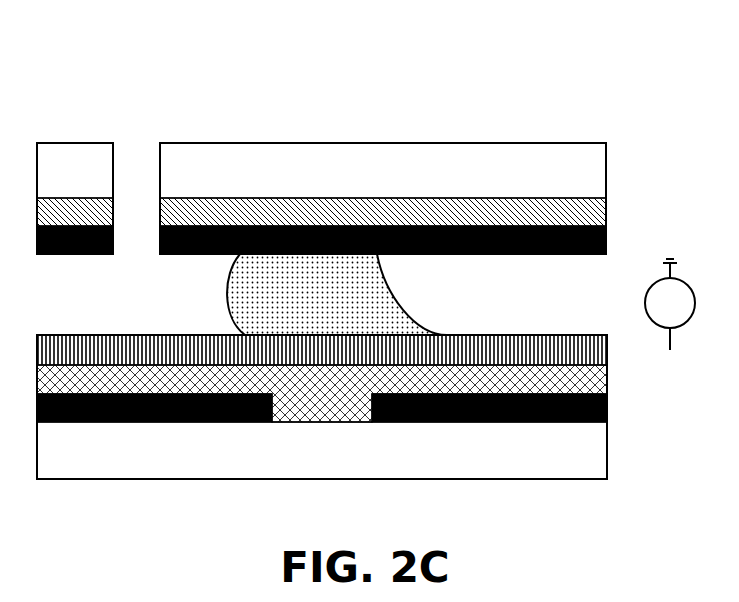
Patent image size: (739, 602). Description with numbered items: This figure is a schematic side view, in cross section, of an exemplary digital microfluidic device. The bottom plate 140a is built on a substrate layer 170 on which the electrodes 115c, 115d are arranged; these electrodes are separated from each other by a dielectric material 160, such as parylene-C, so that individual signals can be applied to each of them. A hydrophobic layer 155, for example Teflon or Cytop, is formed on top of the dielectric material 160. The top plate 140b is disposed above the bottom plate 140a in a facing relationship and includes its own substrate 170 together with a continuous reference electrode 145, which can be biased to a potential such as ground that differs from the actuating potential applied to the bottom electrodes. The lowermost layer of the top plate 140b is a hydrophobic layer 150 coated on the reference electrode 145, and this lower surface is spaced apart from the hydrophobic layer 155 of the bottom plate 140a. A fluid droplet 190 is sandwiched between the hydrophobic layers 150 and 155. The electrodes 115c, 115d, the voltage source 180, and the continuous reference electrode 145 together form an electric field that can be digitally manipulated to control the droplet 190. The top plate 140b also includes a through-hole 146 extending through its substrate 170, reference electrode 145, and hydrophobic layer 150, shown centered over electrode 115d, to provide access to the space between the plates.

The electrode 115c is at (489, 408).
The electrode 115d is at (154, 408).
The bottom plate 140a is at (170, 485).
The top plate 140b is at (458, 130).
The continuous reference electrode 145 is at (321, 212).
The through-hole 146 is at (138, 139).
The hydrophobic layer 150 is at (321, 240).
The hydrophobic layer 155 is at (322, 350).
The dielectric material 160 is at (322, 393).
The substrate layer 170 is at (322, 311).
The voltage source 180 is at (670, 304).
The fluid droplet 190 is at (337, 294).